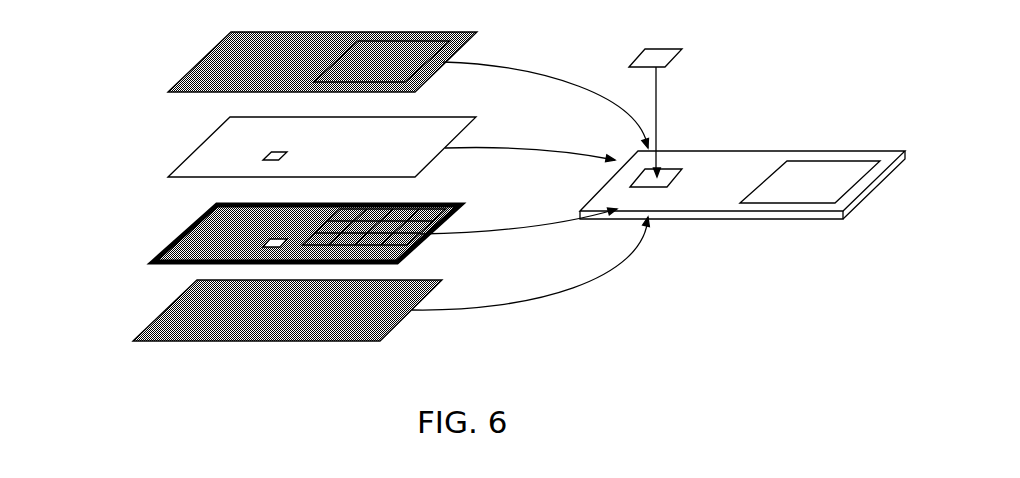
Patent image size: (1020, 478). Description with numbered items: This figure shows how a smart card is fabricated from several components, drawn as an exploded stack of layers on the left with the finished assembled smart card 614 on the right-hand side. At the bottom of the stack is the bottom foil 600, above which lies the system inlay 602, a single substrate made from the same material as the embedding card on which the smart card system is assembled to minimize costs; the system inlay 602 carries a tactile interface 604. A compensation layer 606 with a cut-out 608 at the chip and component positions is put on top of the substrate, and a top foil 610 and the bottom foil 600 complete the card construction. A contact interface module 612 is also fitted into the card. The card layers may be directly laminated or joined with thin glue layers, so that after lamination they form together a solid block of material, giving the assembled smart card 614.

The bottom foil 600 is at (195, 305).
The system inlay 602 is at (205, 241).
The tactile interface 604 is at (412, 245).
The compensation layer 606 is at (217, 145).
The cut-out 608 is at (268, 155).
The top foil 610 is at (208, 62).
The contact interface module 612 is at (665, 40).
The assembled smart card 614 is at (697, 203).